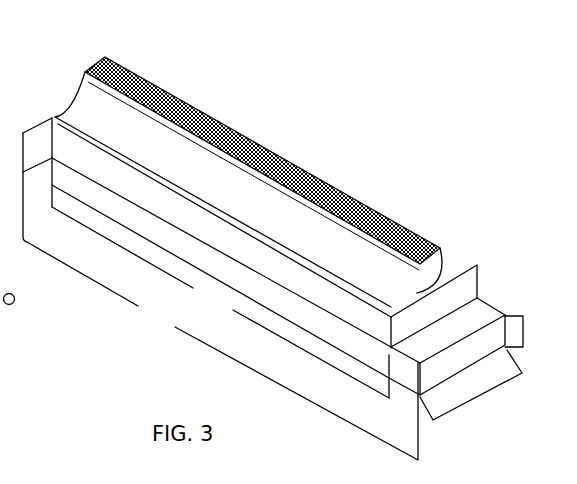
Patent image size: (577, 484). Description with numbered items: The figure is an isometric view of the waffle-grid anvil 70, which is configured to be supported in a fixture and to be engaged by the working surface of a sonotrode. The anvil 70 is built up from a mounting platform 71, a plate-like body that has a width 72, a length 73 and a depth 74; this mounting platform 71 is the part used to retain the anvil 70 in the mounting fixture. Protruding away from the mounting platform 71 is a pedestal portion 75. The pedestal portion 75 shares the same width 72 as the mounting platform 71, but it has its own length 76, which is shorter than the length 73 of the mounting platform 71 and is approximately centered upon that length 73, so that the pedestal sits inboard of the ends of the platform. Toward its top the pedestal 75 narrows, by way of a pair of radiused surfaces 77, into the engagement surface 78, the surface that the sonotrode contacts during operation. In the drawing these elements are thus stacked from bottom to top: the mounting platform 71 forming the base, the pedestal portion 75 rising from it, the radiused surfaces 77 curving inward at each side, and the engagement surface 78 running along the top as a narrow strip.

The anvil 70 is at (320, 143).
The mounting platform 71 is at (35, 155).
The width 72 is at (483, 399).
The length 73 is at (175, 327).
The depth 74 is at (523, 328).
The pedestal portion 75 is at (457, 292).
The length 76 is at (220, 291).
The radiused surfaces 77 is at (452, 277).
The engagement surface 78 is at (90, 64).